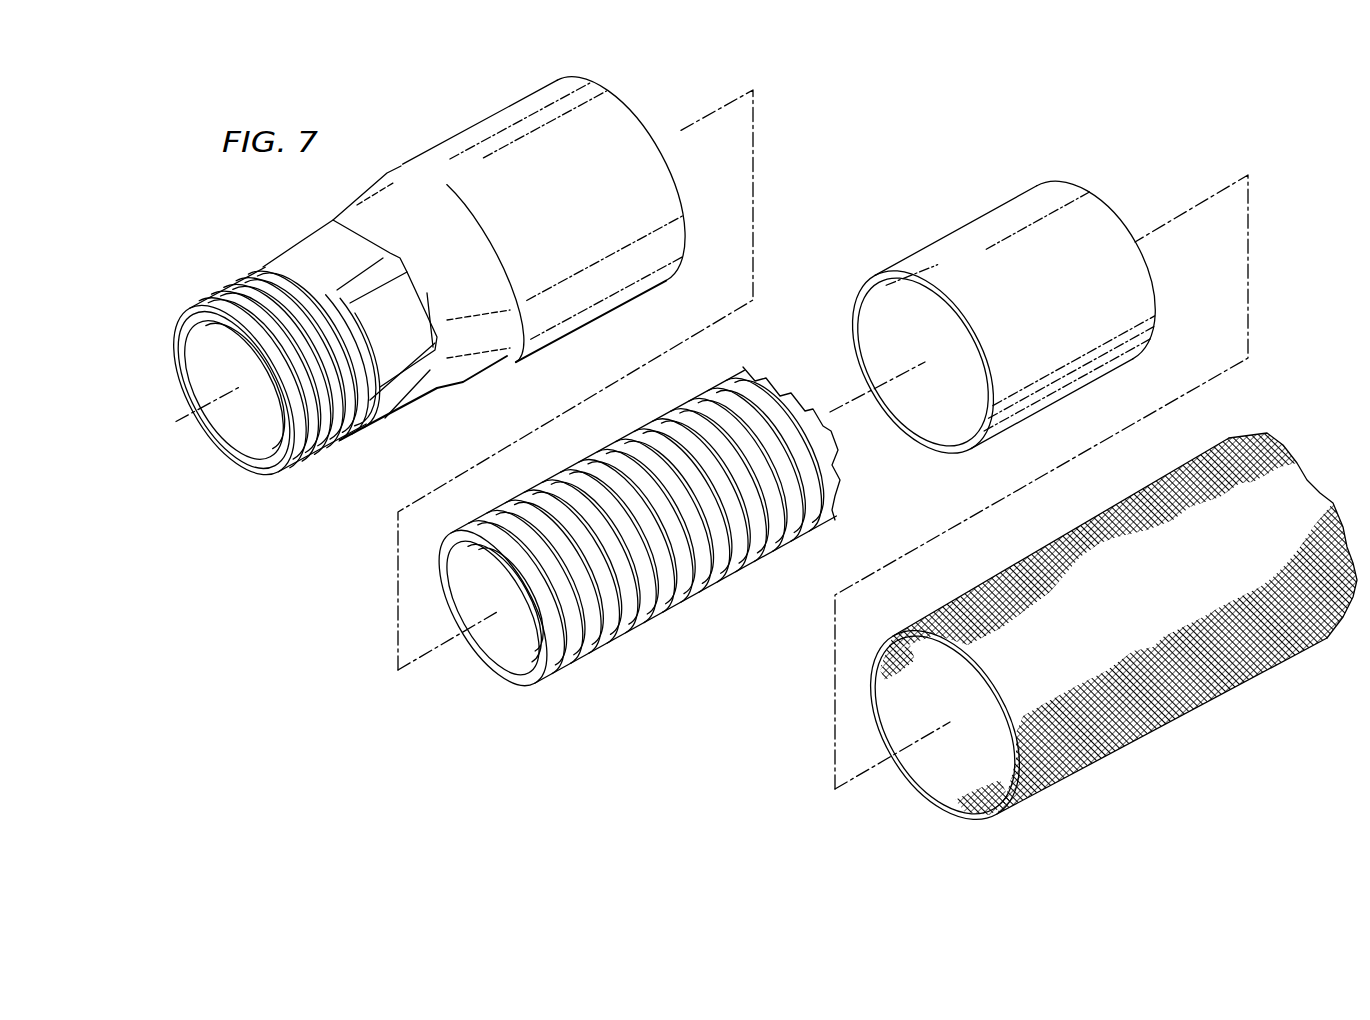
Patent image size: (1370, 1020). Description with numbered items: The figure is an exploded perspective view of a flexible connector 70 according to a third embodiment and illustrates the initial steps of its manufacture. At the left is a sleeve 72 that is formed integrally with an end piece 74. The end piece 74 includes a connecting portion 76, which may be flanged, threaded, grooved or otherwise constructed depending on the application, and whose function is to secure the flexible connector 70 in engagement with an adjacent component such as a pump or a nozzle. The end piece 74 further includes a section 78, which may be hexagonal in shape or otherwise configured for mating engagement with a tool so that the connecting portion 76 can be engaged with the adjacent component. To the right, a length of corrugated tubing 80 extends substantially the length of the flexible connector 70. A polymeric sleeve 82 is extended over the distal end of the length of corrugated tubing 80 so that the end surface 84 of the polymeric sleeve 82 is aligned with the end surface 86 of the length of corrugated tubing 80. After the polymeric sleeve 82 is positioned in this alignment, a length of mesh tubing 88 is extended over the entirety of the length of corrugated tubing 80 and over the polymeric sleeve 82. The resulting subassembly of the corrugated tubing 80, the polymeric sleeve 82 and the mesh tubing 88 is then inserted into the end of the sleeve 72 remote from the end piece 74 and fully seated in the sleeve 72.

The flexible connector 70 is at (266, 704).
The sleeve 72 is at (455, 128).
The end piece 74 is at (262, 265).
The connecting portion 76 is at (308, 462).
The section 78 is at (388, 418).
The length of corrugated tubing 80 is at (647, 622).
The polymeric sleeve 82 is at (934, 237).
The end surface 84 is at (913, 436).
The end surface 86 is at (530, 683).
The length of mesh tubing 88 is at (1223, 688).